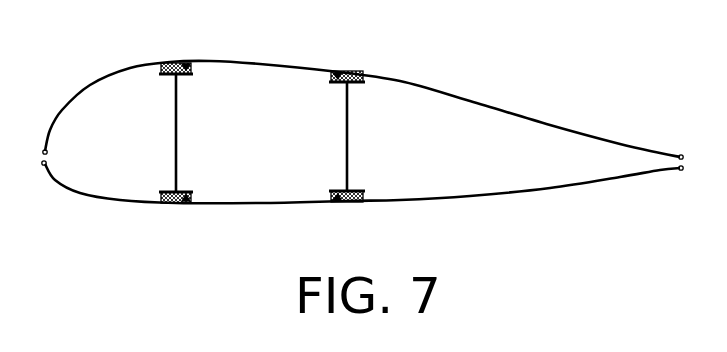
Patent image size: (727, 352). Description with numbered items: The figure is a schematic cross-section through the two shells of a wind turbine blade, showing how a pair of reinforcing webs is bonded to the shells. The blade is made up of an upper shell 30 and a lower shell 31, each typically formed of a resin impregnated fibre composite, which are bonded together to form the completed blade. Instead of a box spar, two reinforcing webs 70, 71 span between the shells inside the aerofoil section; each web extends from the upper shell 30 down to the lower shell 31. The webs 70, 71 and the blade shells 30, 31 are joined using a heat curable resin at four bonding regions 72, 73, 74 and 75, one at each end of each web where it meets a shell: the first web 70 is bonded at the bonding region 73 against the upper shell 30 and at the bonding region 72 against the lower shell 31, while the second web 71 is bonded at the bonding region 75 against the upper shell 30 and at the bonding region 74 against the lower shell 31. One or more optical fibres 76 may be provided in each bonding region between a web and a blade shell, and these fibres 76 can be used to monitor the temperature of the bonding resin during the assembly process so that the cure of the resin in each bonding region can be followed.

The upper shell 30 is at (553, 125).
The lower shell 31 is at (553, 193).
The reinforcing web 70 is at (178, 132).
The reinforcing web 71 is at (349, 132).
The bonding region 72 is at (170, 204).
The bonding region 73 is at (170, 63).
The bonding region 74 is at (350, 202).
The bonding region 75 is at (352, 72).
The optical fibre 76 is at (190, 66).